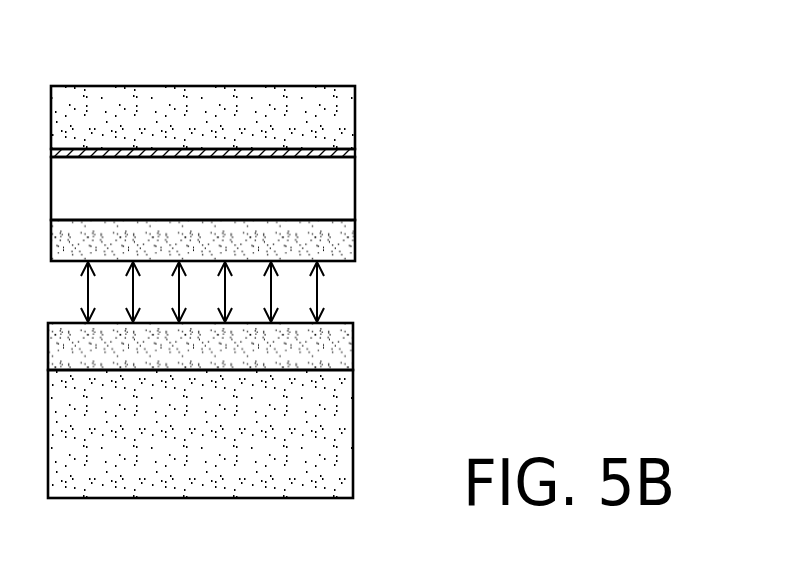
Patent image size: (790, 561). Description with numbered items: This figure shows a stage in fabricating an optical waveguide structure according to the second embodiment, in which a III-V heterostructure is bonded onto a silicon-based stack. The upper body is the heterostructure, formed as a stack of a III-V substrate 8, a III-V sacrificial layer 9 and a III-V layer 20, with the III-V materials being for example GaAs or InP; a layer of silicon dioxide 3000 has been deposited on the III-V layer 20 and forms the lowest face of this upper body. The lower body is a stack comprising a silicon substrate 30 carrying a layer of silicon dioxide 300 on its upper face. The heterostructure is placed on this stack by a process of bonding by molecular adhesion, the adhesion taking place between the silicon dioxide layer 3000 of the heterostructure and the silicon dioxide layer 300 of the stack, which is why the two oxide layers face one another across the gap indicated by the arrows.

The III-V substrate 8 is at (346, 113).
The III-V sacrificial layer 9 is at (346, 155).
The III-V layer 20 is at (345, 202).
The layer of silicon dioxide 3000 is at (345, 248).
The layer of silicon dioxide 300 is at (345, 341).
The silicon substrate 30 is at (340, 408).